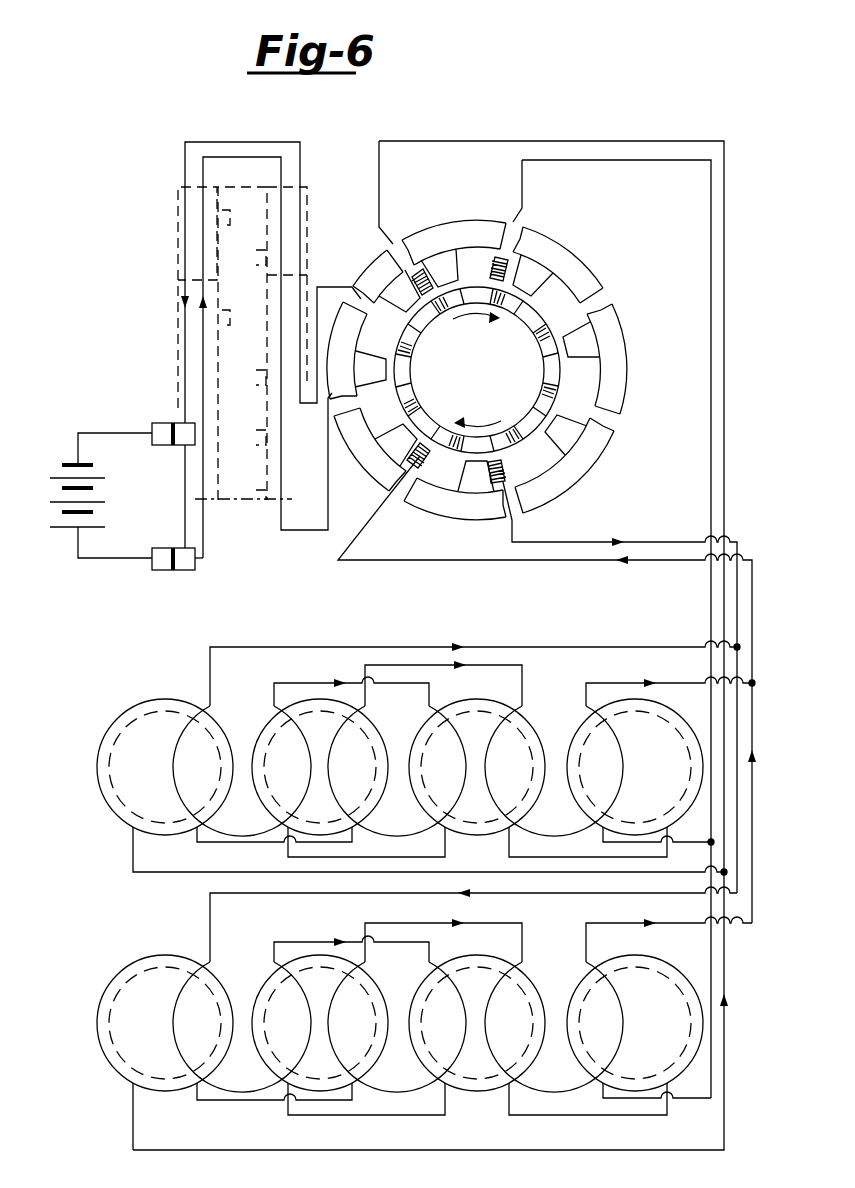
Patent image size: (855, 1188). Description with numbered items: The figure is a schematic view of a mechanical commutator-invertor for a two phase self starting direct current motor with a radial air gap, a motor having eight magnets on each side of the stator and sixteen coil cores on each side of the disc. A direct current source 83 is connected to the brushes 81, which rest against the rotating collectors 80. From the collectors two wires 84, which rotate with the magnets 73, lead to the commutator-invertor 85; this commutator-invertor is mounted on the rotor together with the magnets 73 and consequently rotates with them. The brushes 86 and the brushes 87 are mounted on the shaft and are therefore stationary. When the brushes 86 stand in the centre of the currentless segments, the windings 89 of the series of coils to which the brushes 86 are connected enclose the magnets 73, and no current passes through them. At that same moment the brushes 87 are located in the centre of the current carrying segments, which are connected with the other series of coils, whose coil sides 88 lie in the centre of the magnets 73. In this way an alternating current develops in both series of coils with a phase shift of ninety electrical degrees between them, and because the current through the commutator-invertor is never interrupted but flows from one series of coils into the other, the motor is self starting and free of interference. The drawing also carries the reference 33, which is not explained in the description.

The stator core 33 is at (240, 292).
The magnets 73 is at (245, 247).
The rotating collectors 80 is at (232, 499).
The brushes 81 is at (158, 553).
The direct current source 83 is at (70, 462).
The wires 84 is at (275, 158).
The commutator-invertor 85 is at (543, 327).
The brushes 86 is at (493, 265).
The brushes 87 is at (495, 473).
The coil sides 88 is at (182, 800).
The windings 89 is at (127, 705).